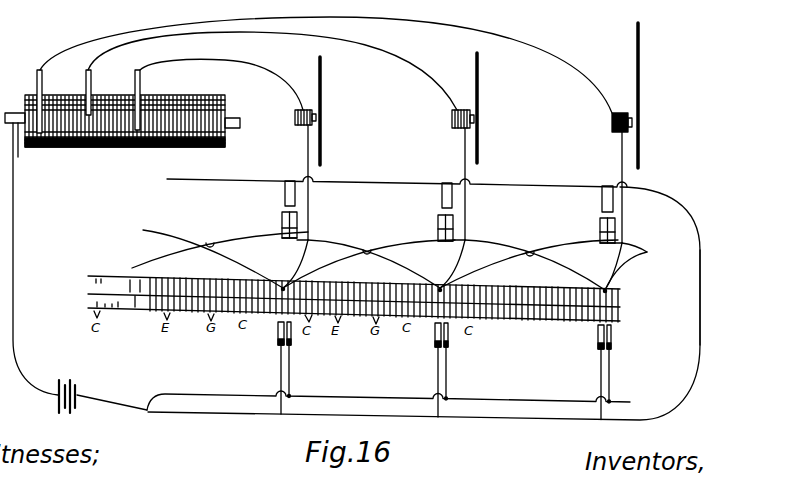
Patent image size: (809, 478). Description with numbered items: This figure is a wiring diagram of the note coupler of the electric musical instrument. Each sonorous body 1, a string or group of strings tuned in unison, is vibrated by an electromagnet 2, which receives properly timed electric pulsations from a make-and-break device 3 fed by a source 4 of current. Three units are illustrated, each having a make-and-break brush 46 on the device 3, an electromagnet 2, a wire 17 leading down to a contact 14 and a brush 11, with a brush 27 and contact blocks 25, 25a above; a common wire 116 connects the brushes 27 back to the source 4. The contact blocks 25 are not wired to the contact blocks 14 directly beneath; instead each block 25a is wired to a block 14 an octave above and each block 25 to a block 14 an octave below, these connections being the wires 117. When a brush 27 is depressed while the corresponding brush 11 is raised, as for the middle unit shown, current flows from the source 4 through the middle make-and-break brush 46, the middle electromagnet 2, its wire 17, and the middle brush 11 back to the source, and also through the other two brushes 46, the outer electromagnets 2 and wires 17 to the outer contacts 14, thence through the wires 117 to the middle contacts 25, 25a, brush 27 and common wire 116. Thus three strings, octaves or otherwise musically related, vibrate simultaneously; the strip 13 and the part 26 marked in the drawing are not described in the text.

The sonorous body 1 is at (320, 86).
The electromagnet 2 is at (292, 117).
The make-and-break device 3 is at (115, 150).
The source 4 is at (78, 392).
The brush 11 is at (278, 332).
The contact strip 13 is at (618, 316).
The contact block 14 is at (281, 288).
The wire 17 is at (308, 157).
The contact block 25 is at (282, 227).
The contact block 25a is at (299, 231).
The contact block partition 26 is at (293, 228).
The brush 27 is at (285, 196).
The make-and-break brush 46 is at (43, 80).
The common wire 116 is at (700, 360).
The wire 117 is at (389, 255).